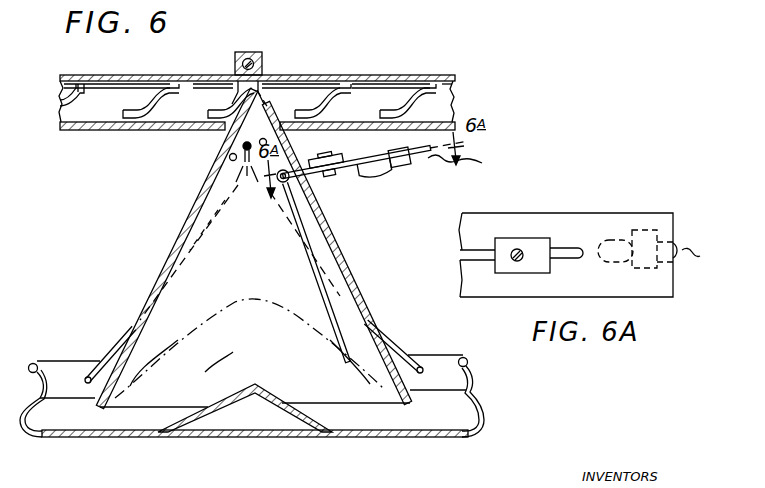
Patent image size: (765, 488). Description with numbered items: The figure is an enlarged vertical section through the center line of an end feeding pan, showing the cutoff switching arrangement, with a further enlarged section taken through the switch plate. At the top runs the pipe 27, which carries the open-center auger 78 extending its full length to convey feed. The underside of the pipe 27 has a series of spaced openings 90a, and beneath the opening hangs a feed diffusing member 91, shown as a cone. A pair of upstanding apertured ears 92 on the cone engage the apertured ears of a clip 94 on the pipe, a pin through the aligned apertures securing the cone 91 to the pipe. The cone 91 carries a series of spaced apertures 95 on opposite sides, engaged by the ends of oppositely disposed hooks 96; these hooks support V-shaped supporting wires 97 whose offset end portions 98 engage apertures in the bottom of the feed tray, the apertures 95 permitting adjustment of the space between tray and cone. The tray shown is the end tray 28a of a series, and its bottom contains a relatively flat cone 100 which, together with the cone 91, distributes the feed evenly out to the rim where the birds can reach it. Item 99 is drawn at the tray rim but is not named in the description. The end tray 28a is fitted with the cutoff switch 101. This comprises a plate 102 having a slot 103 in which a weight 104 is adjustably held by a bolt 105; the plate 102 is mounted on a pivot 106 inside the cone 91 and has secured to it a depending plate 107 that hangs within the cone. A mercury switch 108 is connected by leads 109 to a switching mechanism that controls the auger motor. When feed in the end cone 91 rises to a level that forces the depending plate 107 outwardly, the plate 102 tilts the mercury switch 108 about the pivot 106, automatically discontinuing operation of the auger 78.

In FIG. 6, the pipe 27 is at (321, 76).
In FIG. 6, the auger 78 is at (192, 75).
In FIG. 6, the clip 94 is at (259, 60).
In FIG. 6, the upstanding apertured ears 92 is at (264, 80).
In FIG. 6, the spaced openings 90a is at (213, 160).
In FIG. 6, the feed diffusing member 91 is at (344, 258).
In FIG. 6, the spaced apertures 95 is at (229, 159).
In FIG. 6, the hooks 96 is at (245, 172).
In FIG. 6, the cutoff switch 101 is at (373, 184).
In FIG. 6, the pivot 106 is at (337, 184).
In FIG. 6, the plate 102 is at (372, 195).
In FIG. 6A, the plate 102 is at (510, 217).
In FIG. 6, the mercury switch 108 is at (428, 176).
In FIG. 6A, the mercury switch 108 is at (624, 237).
In FIG. 6, the leads 109 is at (378, 184).
In FIG. 6A, the leads 109 is at (686, 250).
In FIG. 6, the depending plate 107 is at (353, 288).
In FIG. 6, the V-shaped supporting wires 97 is at (404, 352).
In FIG. 6, the offset end portions 98 is at (90, 372).
In FIG. 6, the tray wall 99 is at (426, 368).
In FIG. 6, the flat cone 100 is at (282, 414).
In FIG. 6, the end tray 28a is at (389, 437).
In FIG. 6A, the slot 103 is at (580, 247).
In FIG. 6A, the weight 104 is at (537, 238).
In FIG. 6A, the bolt 105 is at (521, 262).